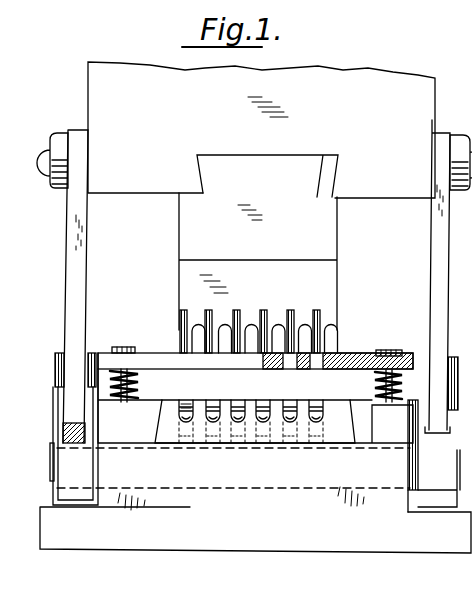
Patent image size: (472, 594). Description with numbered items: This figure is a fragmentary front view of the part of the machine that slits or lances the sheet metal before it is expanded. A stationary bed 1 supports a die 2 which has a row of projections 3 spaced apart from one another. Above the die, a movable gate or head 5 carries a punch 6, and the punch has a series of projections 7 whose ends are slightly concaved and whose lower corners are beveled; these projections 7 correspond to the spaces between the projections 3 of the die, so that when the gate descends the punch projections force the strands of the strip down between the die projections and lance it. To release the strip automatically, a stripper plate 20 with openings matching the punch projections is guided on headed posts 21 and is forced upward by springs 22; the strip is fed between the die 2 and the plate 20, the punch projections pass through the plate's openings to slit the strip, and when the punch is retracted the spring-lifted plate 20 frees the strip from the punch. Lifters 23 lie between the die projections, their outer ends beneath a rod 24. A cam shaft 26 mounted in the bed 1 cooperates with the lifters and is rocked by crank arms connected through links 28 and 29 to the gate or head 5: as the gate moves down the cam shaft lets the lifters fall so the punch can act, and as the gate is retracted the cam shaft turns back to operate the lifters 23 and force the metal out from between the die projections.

The stationary bed 1 is at (310, 543).
The die 2 is at (348, 404).
The projections of the die 3 is at (275, 402).
The movable gate or head 5 is at (285, 73).
The punch 6 is at (327, 282).
The punch projections 7 is at (182, 337).
The stripper plate 20 is at (358, 356).
The headed posts 21 is at (122, 347).
The springs 22 is at (139, 381).
The lifters 23 is at (178, 418).
The rod 24 is at (184, 400).
The cam shaft 26 is at (62, 328).
The link 28 is at (80, 273).
The link 29 is at (438, 262).